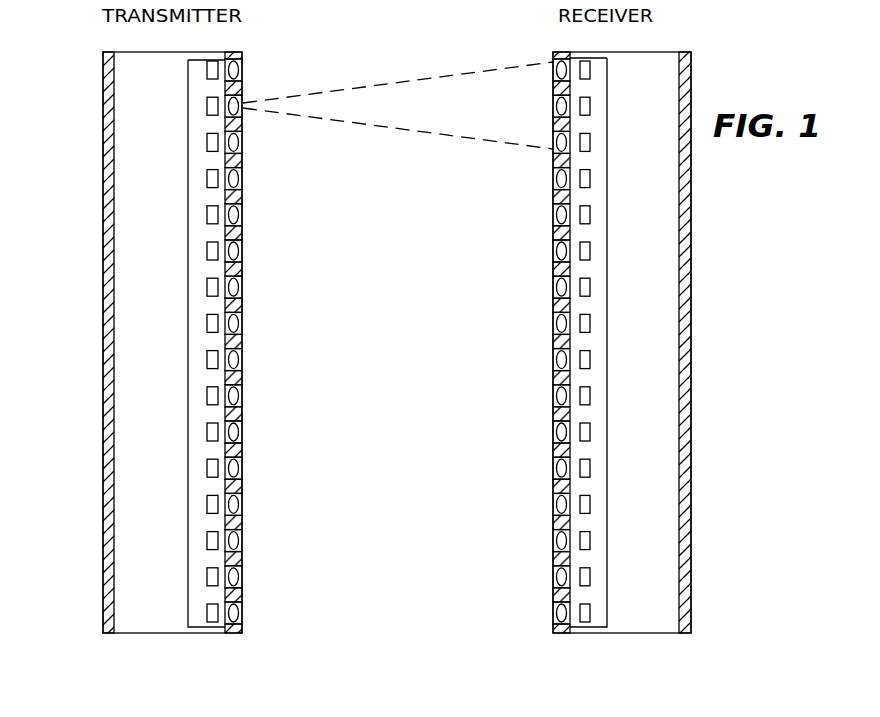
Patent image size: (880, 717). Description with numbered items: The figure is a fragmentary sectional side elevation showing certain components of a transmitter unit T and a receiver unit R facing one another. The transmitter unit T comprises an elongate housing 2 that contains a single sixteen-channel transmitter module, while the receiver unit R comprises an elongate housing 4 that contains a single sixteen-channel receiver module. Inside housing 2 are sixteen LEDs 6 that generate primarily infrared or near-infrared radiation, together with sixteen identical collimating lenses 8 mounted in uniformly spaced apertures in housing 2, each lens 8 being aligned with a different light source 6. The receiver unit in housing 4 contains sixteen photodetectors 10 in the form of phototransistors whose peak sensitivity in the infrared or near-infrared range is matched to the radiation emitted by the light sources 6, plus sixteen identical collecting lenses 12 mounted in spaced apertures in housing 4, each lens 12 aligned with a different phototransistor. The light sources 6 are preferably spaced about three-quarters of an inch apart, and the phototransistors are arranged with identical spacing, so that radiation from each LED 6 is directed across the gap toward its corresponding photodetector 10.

The housing 2 is at (103, 260).
The housing 4 is at (692, 296).
The LEDs 6 is at (207, 215).
The collimating lenses 8 is at (243, 251).
The photodetectors 10 is at (590, 177).
The collecting lenses 12 is at (553, 248).
The transmitter unit T is at (101, 385).
The receiver unit R is at (693, 395).